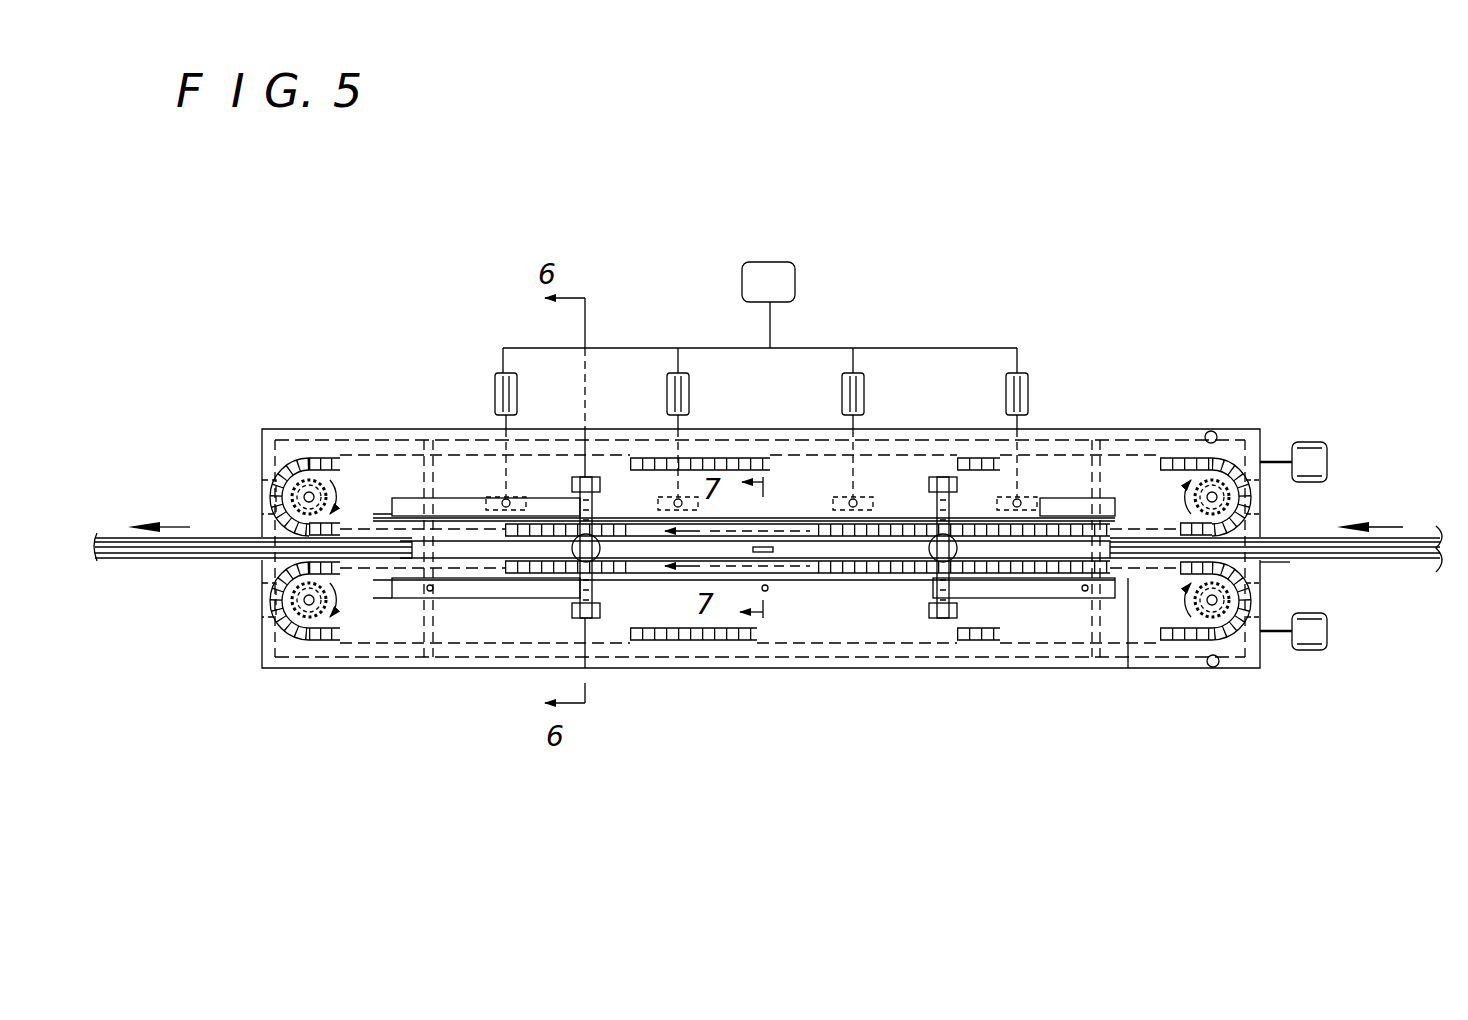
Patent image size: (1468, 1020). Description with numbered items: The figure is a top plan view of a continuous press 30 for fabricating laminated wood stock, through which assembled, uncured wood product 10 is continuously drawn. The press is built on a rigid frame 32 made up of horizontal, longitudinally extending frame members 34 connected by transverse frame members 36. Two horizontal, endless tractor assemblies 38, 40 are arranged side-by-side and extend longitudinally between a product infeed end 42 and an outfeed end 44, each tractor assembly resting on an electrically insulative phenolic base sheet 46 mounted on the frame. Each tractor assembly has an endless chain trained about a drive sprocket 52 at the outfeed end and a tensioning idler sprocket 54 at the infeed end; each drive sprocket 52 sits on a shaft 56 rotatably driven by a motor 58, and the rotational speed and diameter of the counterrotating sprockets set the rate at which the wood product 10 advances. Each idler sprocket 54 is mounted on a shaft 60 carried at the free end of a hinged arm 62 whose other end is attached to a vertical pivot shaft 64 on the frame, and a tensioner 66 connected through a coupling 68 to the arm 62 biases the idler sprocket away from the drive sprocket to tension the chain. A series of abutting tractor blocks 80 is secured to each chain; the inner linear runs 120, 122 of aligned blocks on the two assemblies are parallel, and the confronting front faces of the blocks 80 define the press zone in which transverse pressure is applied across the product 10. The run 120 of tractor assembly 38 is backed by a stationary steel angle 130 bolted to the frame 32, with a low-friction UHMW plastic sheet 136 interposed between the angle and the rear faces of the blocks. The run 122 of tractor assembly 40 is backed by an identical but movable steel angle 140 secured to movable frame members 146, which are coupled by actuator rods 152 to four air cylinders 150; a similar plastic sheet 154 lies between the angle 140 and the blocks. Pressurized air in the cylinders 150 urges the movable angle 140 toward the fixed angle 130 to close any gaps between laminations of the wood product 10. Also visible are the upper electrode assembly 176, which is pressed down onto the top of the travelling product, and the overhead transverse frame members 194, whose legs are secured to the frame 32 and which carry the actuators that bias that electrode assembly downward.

The wood product 10 is at (148, 560).
The continuous press 30 is at (997, 290).
The frame 32 is at (348, 668).
The longitudinally extending frame members 34 is at (1186, 427).
The transverse frame members 36 is at (412, 428).
The tractor assembly 38 is at (686, 672).
The tractor assembly 40 is at (813, 387).
The product infeed end 42 is at (1267, 563).
The outfeed end 44 is at (253, 565).
The base sheet 46 is at (872, 494).
The drive sprocket 52 is at (293, 474).
The tensioning idler sprocket 54 is at (1262, 517).
The shaft 56 is at (304, 498).
The motor 58 is at (335, 427).
The shaft 60 is at (1217, 497).
The hinged arm 62 is at (1250, 428).
The vertical pivot shaft 64 is at (1218, 430).
The tensioner 66 is at (1328, 455).
The coupling 68 is at (1274, 442).
The tractor blocks 80 is at (330, 458).
The inner linear run 120 is at (820, 580).
The inner linear run 122 is at (796, 528).
The steel angle 130 is at (1062, 590).
The sheet 136 is at (1128, 668).
The steel angle 140 is at (1062, 500).
The movable frame members 146 is at (450, 427).
The air cylinders 150 is at (517, 400).
The actuator rods 152 is at (512, 428).
The sheet 154 is at (1115, 517).
The upper electrode assembly 176 is at (595, 620).
The transverse frame member 194 is at (572, 610).